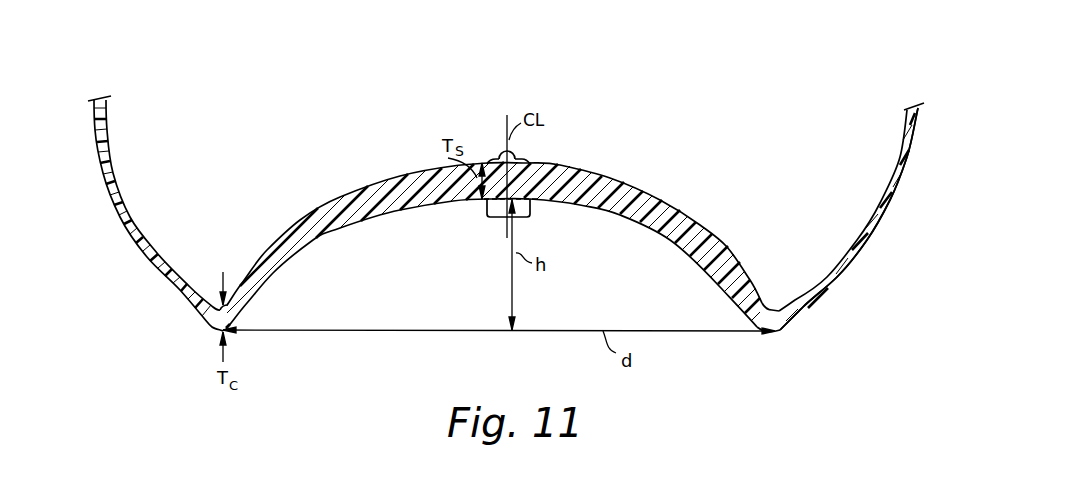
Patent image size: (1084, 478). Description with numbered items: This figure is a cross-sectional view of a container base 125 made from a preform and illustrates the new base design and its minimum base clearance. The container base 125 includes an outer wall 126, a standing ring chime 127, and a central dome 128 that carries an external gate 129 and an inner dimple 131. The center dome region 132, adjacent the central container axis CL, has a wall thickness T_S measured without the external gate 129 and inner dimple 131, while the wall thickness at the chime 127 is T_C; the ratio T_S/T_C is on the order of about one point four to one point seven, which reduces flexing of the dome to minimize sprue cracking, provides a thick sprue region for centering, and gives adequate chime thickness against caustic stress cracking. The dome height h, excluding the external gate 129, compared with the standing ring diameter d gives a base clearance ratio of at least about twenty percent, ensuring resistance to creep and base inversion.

The container base 125 is at (877, 255).
The outer wall 126 is at (888, 213).
The standing ring chime 127 is at (775, 334).
The central dome 128 is at (638, 222).
The external gate 129 is at (526, 216).
The inner dimple 131 is at (516, 153).
The center dome region 132 is at (529, 163).